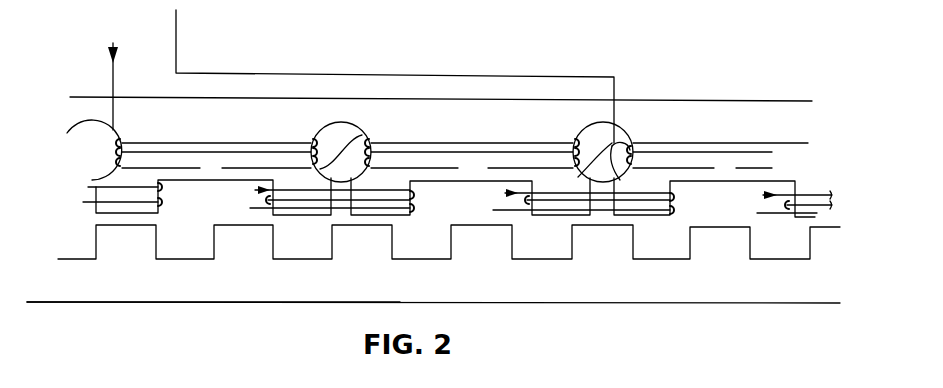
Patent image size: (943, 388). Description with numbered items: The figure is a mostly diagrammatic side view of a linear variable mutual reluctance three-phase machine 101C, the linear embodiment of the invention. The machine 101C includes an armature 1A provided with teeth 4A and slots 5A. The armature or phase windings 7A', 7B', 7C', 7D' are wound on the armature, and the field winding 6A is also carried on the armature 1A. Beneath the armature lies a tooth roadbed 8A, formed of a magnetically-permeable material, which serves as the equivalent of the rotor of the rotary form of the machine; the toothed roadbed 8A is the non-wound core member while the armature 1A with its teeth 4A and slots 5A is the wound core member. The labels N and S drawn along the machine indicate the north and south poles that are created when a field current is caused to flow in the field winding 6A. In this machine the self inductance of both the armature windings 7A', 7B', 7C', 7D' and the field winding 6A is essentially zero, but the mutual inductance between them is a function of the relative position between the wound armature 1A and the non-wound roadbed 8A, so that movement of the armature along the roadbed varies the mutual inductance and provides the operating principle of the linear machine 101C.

The armature 1A is at (668, 108).
The field winding 6A is at (267, 143).
The teeth 4A is at (317, 215).
The slots 5A is at (218, 212).
The armature winding 7A' is at (122, 226).
The armature winding 7B' is at (341, 236).
The armature winding 7C' is at (613, 225).
The armature winding 7D' is at (812, 186).
The tooth roadbed 8A is at (627, 297).
The linear variable mutual reluctance machine 101C is at (163, 306).